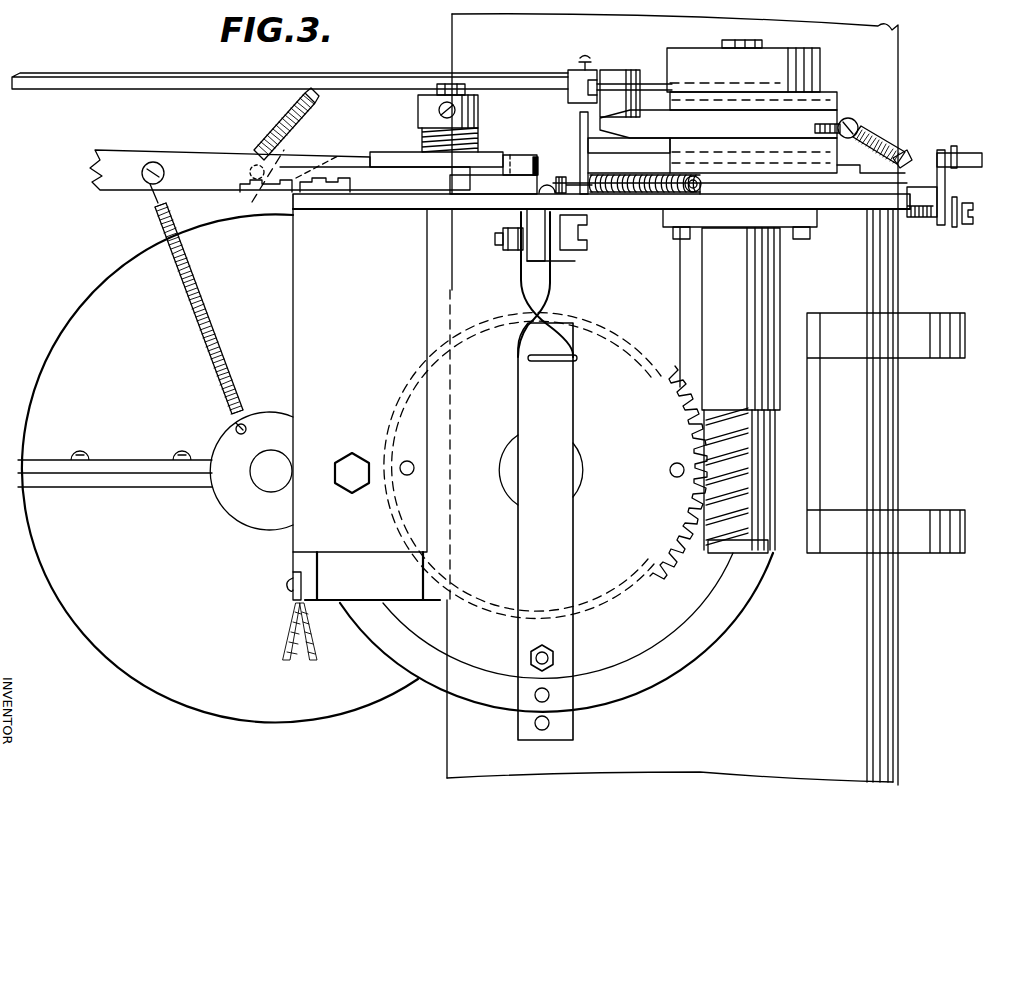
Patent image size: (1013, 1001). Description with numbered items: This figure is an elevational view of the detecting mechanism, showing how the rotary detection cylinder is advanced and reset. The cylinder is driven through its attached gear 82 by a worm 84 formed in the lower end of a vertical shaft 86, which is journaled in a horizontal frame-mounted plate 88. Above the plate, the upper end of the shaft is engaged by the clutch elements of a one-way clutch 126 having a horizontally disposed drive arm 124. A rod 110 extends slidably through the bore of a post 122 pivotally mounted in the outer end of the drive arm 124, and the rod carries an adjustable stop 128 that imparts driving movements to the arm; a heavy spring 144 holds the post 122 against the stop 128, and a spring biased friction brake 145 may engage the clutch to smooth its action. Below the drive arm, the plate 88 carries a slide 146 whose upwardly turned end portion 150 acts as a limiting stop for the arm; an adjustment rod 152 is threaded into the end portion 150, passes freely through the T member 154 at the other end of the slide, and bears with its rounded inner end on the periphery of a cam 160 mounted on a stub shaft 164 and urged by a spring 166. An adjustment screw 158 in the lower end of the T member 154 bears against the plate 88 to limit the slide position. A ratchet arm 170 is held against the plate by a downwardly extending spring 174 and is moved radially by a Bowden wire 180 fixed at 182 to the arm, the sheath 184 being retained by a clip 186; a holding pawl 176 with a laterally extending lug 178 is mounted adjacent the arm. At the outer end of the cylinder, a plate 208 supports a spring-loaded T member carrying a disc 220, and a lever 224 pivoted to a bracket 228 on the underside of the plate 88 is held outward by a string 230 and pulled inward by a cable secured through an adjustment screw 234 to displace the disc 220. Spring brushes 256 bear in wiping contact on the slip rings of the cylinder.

The rod 110 is at (58, 82).
The ratchet arm 170 is at (208, 161).
The spring 174 is at (204, 312).
The Bowden wire 180 is at (314, 97).
The sheath 184 is at (290, 133).
The clip 186 is at (376, 138).
The fixing point 182 is at (256, 196).
The cam 160 is at (392, 142).
The stub shaft 164 is at (466, 120).
The spring 166 is at (479, 141).
The lug 178 is at (465, 186).
The plate 88 is at (824, 205).
The friction brake 145 is at (793, 188).
The holding pawl 176 is at (572, 193).
The drive arm 124 is at (580, 128).
The slide end portion 150 is at (582, 141).
The adjustable stop 128 is at (572, 81).
The post 122 is at (640, 62).
The one-way clutch 126 is at (833, 63).
The spring 144 is at (896, 141).
The adjustment rod 152 is at (975, 132).
The T member 154 is at (947, 190).
The slide 146 is at (915, 192).
The adjustment screw 158 is at (958, 222).
The bracket 228 is at (571, 260).
The string 230 is at (521, 294).
The lever 224 is at (560, 731).
The adjustment screw 234 is at (556, 659).
The disc 220 is at (583, 481).
The plate 208 is at (608, 592).
The gear 82 is at (657, 572).
The vertical shaft 86 is at (750, 300).
The worm 84 is at (770, 469).
The spring brushes 256 is at (340, 605).